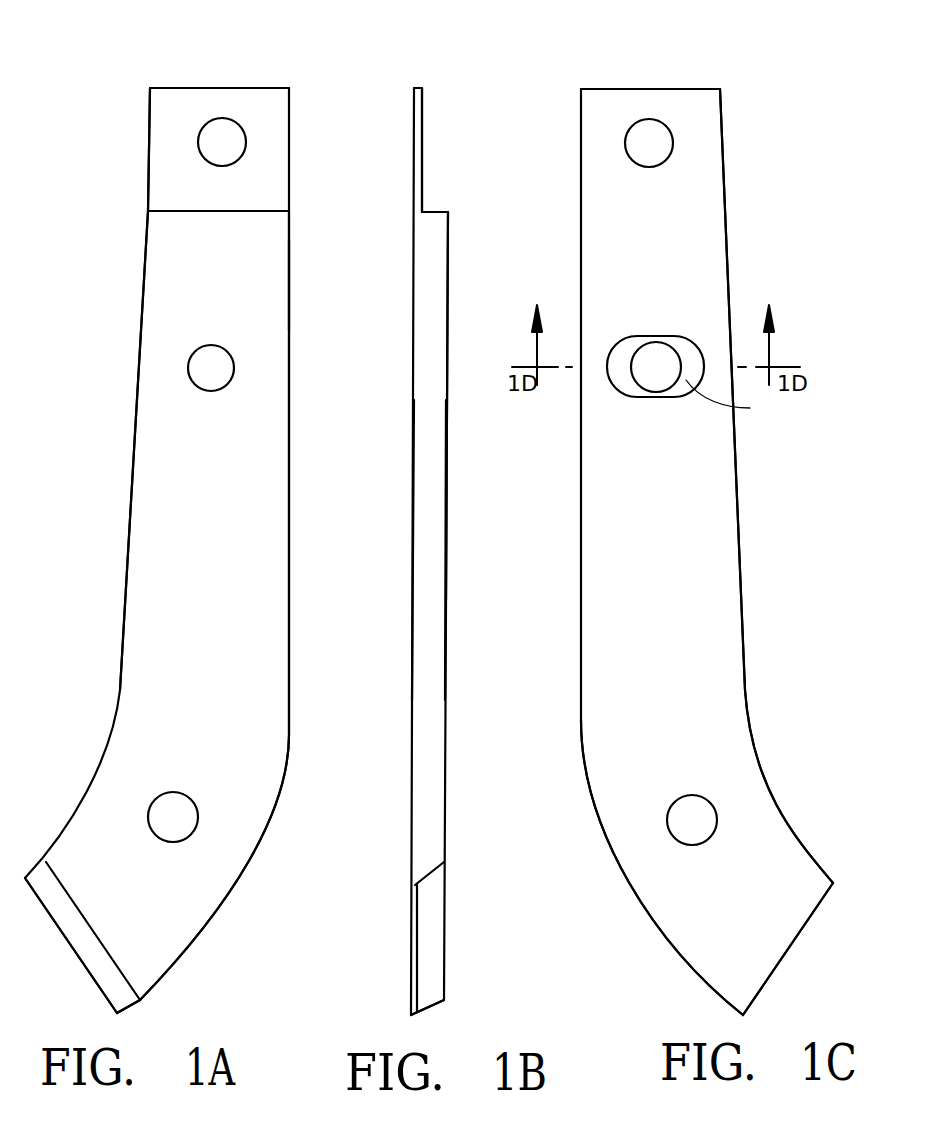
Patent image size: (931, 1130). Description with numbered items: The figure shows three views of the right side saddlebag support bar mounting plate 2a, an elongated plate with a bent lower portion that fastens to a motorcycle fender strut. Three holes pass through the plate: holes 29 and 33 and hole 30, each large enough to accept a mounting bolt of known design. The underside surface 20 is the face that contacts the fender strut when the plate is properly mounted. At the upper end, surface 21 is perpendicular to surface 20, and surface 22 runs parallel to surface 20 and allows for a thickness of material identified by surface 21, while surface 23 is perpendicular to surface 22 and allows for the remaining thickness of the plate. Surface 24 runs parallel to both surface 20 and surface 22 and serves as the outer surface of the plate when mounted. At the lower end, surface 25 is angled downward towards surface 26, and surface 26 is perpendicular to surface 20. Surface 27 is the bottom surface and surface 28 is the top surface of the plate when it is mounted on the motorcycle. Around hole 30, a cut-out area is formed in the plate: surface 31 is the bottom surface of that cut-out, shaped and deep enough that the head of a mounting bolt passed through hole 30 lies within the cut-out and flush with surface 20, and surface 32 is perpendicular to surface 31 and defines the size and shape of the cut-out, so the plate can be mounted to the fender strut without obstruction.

In FIG. 1A, the underside surface 20 is at (157, 550).
In FIG. 1B, the underside surface 20 is at (410, 515).
In FIG. 1C, the underside surface 20 is at (597, 463).
In FIG. 1A, the saddlebag support bar mounting plate 2a is at (272, 287).
In FIG. 1B, the saddlebag support bar mounting plate 2a is at (443, 470).
In FIG. 1C, the saddlebag support bar mounting plate 2a is at (714, 175).
In FIG. 1A, the surface 21 is at (250, 88).
In FIG. 1B, the surface 21 is at (417, 88).
In FIG. 1C, the surface 21 is at (690, 88).
In FIG. 1A, the surface 22 is at (172, 127).
In FIG. 1B, the surface 22 is at (422, 128).
In FIG. 1A, the surface 23 is at (175, 208).
In FIG. 1B, the surface 23 is at (437, 208).
In FIG. 1A, the outer surface 24 is at (230, 640).
In FIG. 1B, the outer surface 24 is at (450, 262).
In FIG. 1A, the angled surface 25 is at (118, 992).
In FIG. 1B, the angled surface 25 is at (434, 963).
In FIG. 1A, the surface 26 is at (95, 983).
In FIG. 1B, the surface 26 is at (412, 972).
In FIG. 1C, the surface 26 is at (795, 945).
In FIG. 1A, the bottom surface 27 is at (128, 517).
In FIG. 1B, the bottom surface 27 is at (423, 571).
In FIG. 1C, the bottom surface 27 is at (741, 587).
In FIG. 1A, the top surface 28 is at (283, 777).
In FIG. 1C, the top surface 28 is at (578, 722).
In FIG. 1A, the hole 29 is at (227, 140).
In FIG. 1C, the hole 29 is at (650, 130).
In FIG. 1A, the hole 30 is at (224, 372).
In FIG. 1C, the hole 30 is at (657, 362).
In FIG. 1C, the cut-out bottom surface 31 is at (736, 401).
In FIG. 1C, the cut-out side surface 32 is at (660, 398).
In FIG. 1A, the hole 33 is at (177, 821).
In FIG. 1C, the hole 33 is at (700, 820).